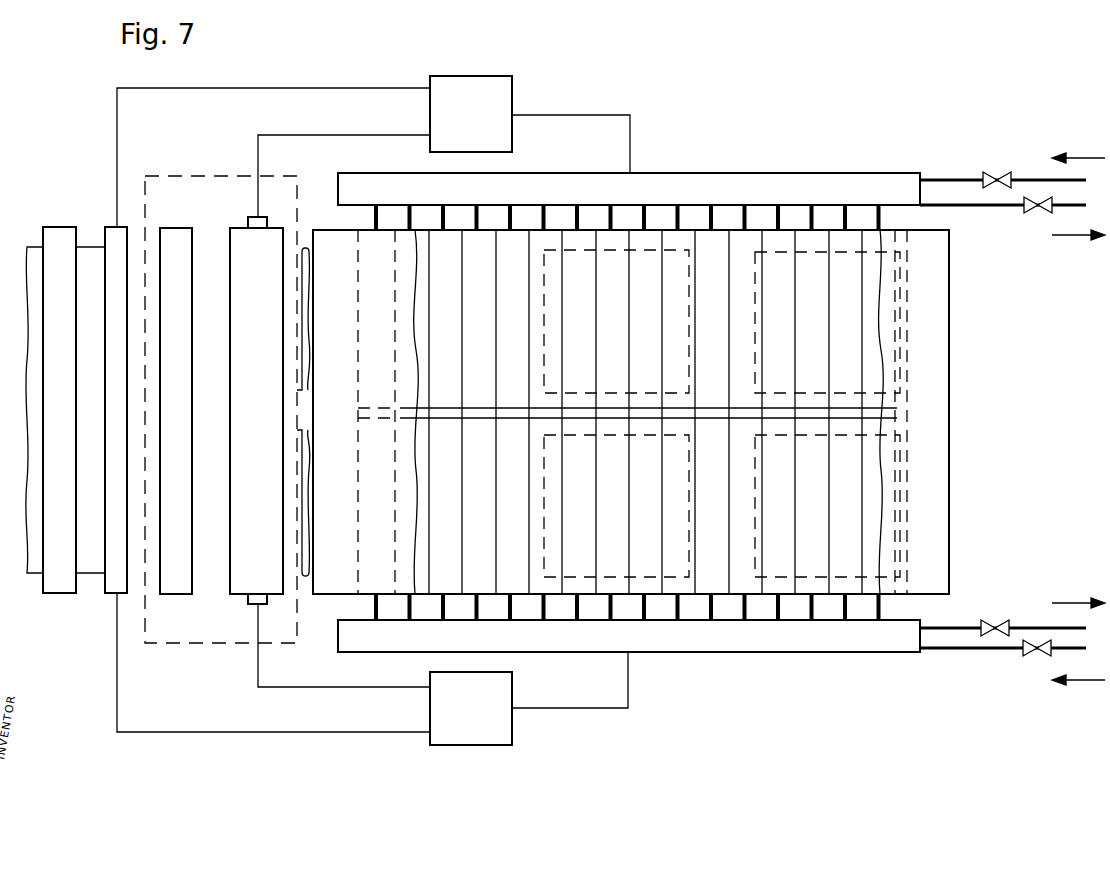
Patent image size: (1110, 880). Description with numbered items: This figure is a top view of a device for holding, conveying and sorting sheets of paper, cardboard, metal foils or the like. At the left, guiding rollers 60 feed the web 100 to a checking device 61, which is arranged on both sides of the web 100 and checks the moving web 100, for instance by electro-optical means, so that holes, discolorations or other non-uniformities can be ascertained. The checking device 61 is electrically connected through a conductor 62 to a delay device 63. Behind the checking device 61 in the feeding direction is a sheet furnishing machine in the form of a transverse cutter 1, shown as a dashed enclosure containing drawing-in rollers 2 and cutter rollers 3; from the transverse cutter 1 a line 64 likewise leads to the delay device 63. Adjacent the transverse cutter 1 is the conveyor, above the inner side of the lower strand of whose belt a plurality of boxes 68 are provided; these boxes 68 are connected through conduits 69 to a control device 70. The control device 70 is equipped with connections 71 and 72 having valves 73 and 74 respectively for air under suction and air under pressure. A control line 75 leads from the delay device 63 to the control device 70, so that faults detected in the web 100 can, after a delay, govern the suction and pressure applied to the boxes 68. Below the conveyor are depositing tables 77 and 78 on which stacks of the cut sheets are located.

The transverse cutter 1 is at (239, 174).
The drawing-in rollers 2 is at (176, 232).
The cutter rollers 3 is at (273, 237).
The guiding rollers 60 is at (61, 233).
The checking device 61 is at (113, 235).
The conductor 62 is at (117, 130).
The delay device 63 is at (502, 96).
The line 64 is at (322, 124).
The boxes 68 is at (645, 412).
The conduits 69 is at (779, 226).
The control device 70 is at (846, 187).
The connection 71 is at (935, 178).
The connection 72 is at (992, 208).
The valve 73 is at (990, 177).
The valve 74 is at (1040, 212).
The control line 75 is at (630, 148).
The depositing table 77 is at (616, 413).
The depositing table 78 is at (827, 414).
The web 100 is at (95, 575).